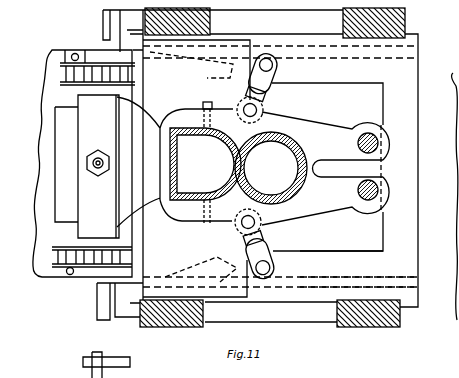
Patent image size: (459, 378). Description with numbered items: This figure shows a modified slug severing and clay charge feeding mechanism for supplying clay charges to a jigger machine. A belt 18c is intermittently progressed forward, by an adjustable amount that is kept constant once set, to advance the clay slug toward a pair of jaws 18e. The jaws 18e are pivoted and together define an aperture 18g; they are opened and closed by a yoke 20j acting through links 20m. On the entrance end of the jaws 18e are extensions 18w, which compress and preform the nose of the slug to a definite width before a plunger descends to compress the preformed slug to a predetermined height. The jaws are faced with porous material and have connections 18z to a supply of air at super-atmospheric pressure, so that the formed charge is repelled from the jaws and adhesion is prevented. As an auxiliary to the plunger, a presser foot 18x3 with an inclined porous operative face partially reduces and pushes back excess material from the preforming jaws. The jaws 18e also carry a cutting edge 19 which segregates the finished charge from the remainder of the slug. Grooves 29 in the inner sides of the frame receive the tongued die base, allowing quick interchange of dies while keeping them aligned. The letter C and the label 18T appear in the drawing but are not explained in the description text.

The presser foot 18x3 is at (117, 128).
The carriage C is at (66, 164).
The belt 18c is at (132, 238).
The extensions 18w is at (168, 97).
The cutting edge 19 is at (243, 142).
The aperture 18g is at (271, 168).
The jaws 18e is at (302, 118).
The pins 18T is at (367, 181).
The connections 18z is at (200, 226).
The links 20m is at (268, 238).
The yoke 20j is at (366, 251).
The grooves 29 is at (394, 280).